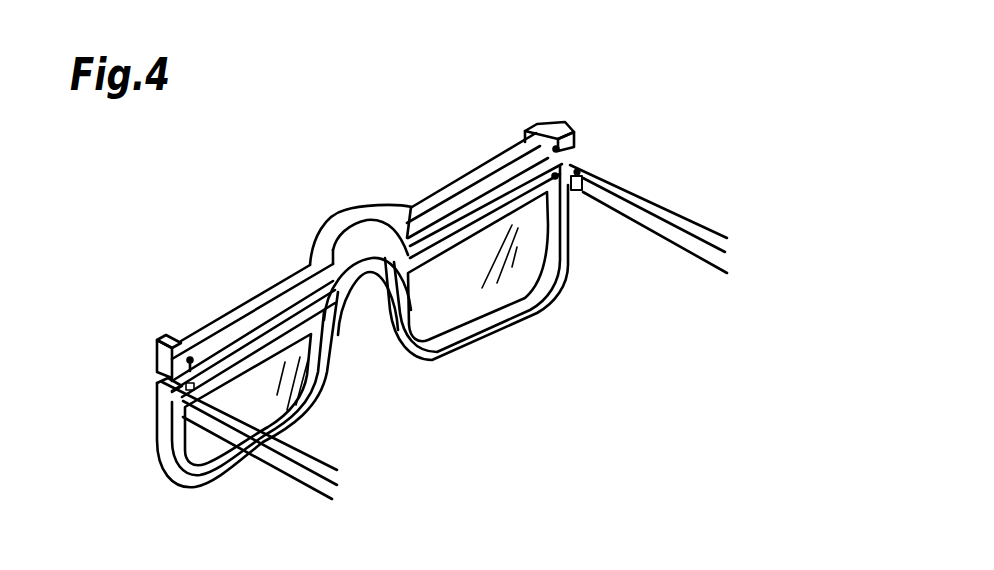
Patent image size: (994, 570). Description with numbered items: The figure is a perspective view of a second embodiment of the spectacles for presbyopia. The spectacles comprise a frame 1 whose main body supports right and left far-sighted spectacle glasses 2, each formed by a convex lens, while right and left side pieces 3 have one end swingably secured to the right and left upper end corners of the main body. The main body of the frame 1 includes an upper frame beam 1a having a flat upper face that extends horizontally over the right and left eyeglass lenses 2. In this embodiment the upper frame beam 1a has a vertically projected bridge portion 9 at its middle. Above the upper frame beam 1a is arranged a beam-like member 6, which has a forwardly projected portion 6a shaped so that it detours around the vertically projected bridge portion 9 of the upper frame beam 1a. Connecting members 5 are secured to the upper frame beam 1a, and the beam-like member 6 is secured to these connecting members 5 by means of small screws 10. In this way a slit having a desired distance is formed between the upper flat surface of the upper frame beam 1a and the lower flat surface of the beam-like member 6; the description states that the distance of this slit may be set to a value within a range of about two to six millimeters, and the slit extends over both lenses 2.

The frame 1 is at (178, 456).
The upper frame beam 1a is at (250, 357).
The far-sighted spectacle glasses 2 is at (214, 445).
The side pieces 3 is at (292, 472).
The connecting members 5 is at (168, 337).
The beam-like member 6 is at (263, 290).
The forwardly projected portion 6a is at (340, 222).
The vertically projected bridge portion 9 is at (372, 250).
The small screws 10 is at (190, 357).